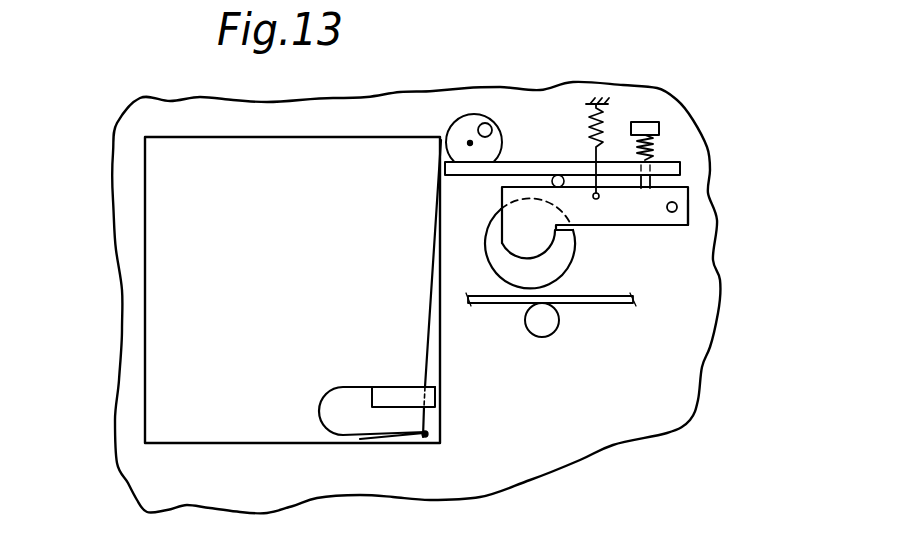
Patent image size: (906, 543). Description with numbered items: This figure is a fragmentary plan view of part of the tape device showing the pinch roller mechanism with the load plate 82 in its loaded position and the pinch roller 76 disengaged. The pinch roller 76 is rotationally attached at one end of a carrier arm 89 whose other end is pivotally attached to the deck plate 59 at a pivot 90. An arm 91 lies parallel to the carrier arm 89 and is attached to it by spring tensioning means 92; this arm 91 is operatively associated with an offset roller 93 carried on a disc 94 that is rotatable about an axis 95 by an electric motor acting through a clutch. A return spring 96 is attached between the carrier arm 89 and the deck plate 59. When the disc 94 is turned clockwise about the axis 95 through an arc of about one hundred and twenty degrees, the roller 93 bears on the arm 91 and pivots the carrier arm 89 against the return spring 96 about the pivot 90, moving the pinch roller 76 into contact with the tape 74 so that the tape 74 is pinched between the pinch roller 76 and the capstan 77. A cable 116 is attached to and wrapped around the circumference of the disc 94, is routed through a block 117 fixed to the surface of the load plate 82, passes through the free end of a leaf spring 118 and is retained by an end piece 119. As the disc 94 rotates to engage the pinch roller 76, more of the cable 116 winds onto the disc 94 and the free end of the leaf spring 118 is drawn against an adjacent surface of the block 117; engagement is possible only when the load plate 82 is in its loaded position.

The deck plate 59 is at (113, 153).
The load plate 82 is at (158, 220).
The disc 94 is at (467, 118).
The offset roller 93 is at (493, 117).
The return spring 96 is at (603, 130).
The spring tensioning means 92 is at (657, 142).
The arm 91 is at (540, 163).
The axis 95 is at (470, 143).
The pivot 90 is at (677, 207).
The carrier arm 89 is at (653, 212).
The pinch roller 76 is at (567, 252).
The capstan 77 is at (547, 322).
The tape 74 is at (620, 307).
The cable 116 is at (434, 333).
The block 117 is at (438, 398).
The leaf spring 118 is at (318, 420).
The end piece 119 is at (425, 437).